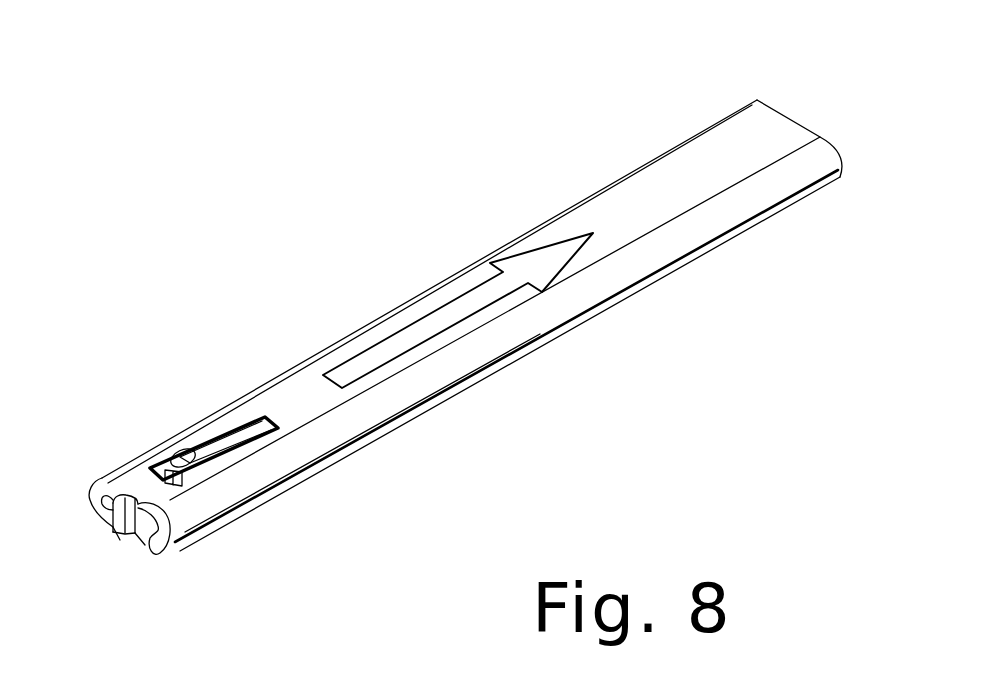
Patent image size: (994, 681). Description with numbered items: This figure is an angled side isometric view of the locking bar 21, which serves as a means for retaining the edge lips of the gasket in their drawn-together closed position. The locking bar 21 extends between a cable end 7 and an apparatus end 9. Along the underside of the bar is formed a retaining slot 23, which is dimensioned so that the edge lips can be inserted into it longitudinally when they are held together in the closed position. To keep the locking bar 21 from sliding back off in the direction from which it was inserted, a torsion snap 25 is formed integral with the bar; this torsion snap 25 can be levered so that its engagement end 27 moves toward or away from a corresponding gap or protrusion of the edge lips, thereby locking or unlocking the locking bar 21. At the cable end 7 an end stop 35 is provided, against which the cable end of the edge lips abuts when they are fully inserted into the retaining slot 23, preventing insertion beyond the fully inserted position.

The cable end 7 is at (128, 565).
The apparatus end 9 is at (797, 105).
The locking bar 21 is at (533, 205).
The retaining slot 23 is at (172, 540).
The torsion snap 25 is at (200, 453).
The engagement end 27 is at (257, 420).
The end stop 35 is at (120, 533).